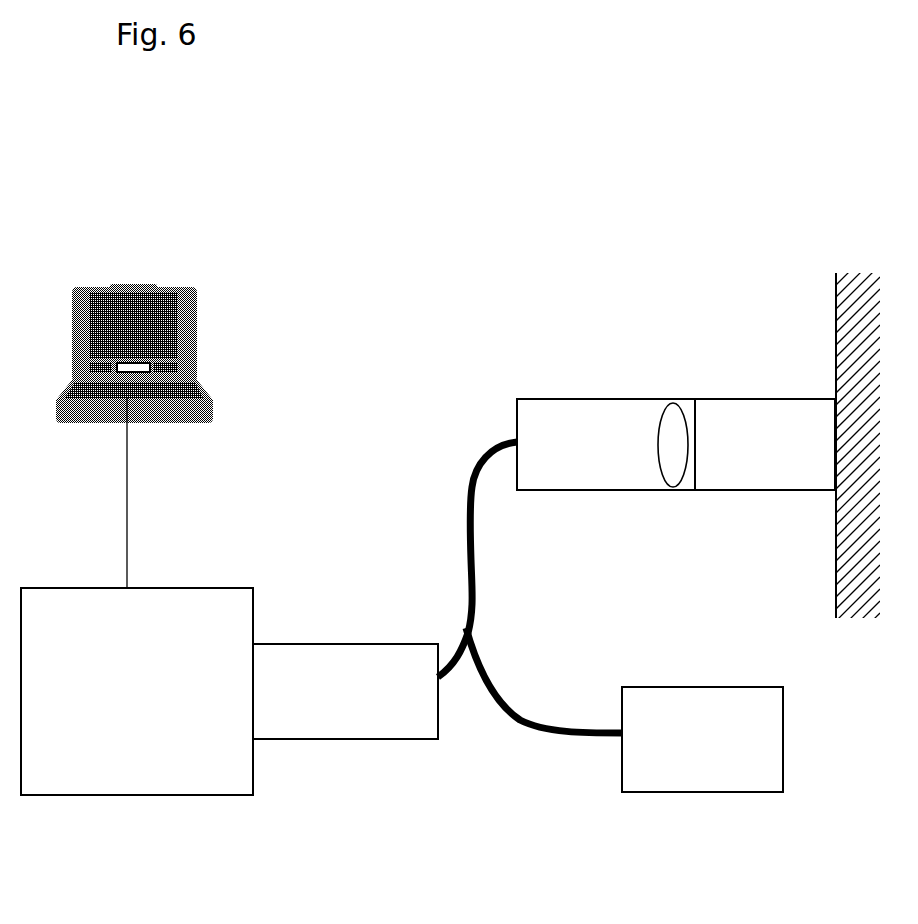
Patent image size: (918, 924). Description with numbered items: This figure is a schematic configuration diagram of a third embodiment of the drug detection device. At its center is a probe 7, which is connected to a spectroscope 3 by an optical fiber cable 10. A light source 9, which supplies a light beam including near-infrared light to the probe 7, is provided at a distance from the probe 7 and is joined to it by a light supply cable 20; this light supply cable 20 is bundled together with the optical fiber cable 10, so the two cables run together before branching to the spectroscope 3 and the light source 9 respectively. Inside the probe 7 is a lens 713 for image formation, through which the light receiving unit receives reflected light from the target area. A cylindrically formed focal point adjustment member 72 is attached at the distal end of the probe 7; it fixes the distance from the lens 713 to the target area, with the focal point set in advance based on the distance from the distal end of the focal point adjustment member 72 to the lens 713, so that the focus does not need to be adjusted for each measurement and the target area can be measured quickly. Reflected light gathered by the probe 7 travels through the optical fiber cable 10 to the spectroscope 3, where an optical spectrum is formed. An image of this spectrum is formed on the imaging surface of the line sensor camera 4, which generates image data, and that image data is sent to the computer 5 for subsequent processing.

The spectroscope 3 is at (365, 708).
The line sensor camera 4 is at (137, 757).
The computer 5 is at (185, 327).
The probe 7 is at (615, 427).
The light source 9 is at (717, 778).
The optical fiber cable 10 is at (468, 517).
The light supply cable 20 is at (532, 727).
The focal point adjustment member 72 is at (782, 393).
The lens 713 is at (671, 417).